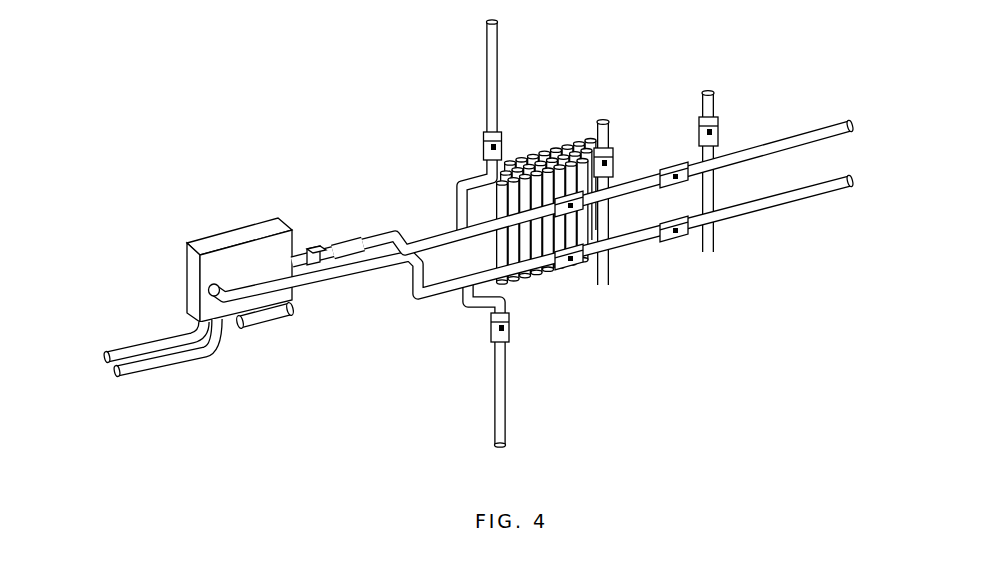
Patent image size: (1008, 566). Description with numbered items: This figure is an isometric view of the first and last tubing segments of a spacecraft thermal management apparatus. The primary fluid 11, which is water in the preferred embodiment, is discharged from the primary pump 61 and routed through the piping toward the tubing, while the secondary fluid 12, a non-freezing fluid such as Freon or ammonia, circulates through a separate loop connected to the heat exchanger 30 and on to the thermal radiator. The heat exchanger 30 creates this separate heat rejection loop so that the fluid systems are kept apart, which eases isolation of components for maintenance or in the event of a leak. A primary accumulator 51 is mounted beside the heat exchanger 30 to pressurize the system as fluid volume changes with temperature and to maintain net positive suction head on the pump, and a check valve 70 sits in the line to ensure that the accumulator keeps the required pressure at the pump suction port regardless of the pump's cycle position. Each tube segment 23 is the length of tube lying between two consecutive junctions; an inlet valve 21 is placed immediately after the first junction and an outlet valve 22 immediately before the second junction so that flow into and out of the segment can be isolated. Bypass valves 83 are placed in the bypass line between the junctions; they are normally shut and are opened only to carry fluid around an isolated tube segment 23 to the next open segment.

The primary fluid 11 is at (913, 109).
The secondary fluid 12 is at (100, 363).
The inlet valve 21 is at (487, 150).
The outlet valve 22 is at (492, 335).
The tube segment 23 is at (538, 152).
The heat exchanger 30 is at (220, 233).
The primary accumulator 51 is at (267, 327).
The primary pump 61 is at (312, 242).
The check valve 70 is at (346, 242).
The bypass valve 83 is at (670, 167).